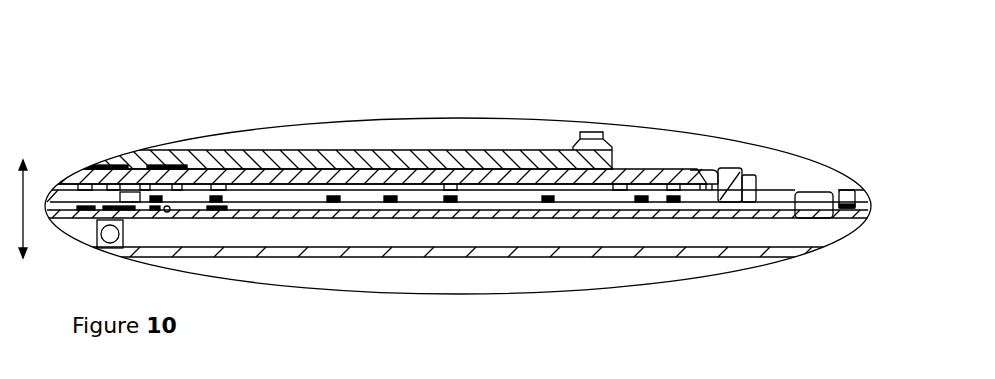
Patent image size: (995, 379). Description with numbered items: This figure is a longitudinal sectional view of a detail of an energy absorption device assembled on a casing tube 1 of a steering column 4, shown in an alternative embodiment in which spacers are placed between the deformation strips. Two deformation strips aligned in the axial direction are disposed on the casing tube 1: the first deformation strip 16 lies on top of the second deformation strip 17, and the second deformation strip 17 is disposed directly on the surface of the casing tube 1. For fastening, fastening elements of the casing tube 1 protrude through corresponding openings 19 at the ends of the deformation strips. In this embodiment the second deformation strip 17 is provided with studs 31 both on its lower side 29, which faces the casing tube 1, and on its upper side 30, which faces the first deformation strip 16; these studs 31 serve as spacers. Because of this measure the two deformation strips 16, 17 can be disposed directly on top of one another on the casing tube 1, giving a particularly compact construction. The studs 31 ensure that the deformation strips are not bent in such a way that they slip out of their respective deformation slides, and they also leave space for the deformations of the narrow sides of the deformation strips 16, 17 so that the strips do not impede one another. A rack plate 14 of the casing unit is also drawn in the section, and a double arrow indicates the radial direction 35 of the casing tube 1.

The casing tube 1 is at (866, 205).
The steering column 4 is at (741, 252).
The rack plate 14 is at (242, 160).
The first deformation strip 16 is at (633, 167).
The second deformation strip 17 is at (700, 170).
The opening 19 is at (823, 207).
The lower side 29 is at (315, 212).
The upper side 30 is at (283, 184).
The studs 31 is at (545, 186).
The radial direction 35 is at (26, 183).